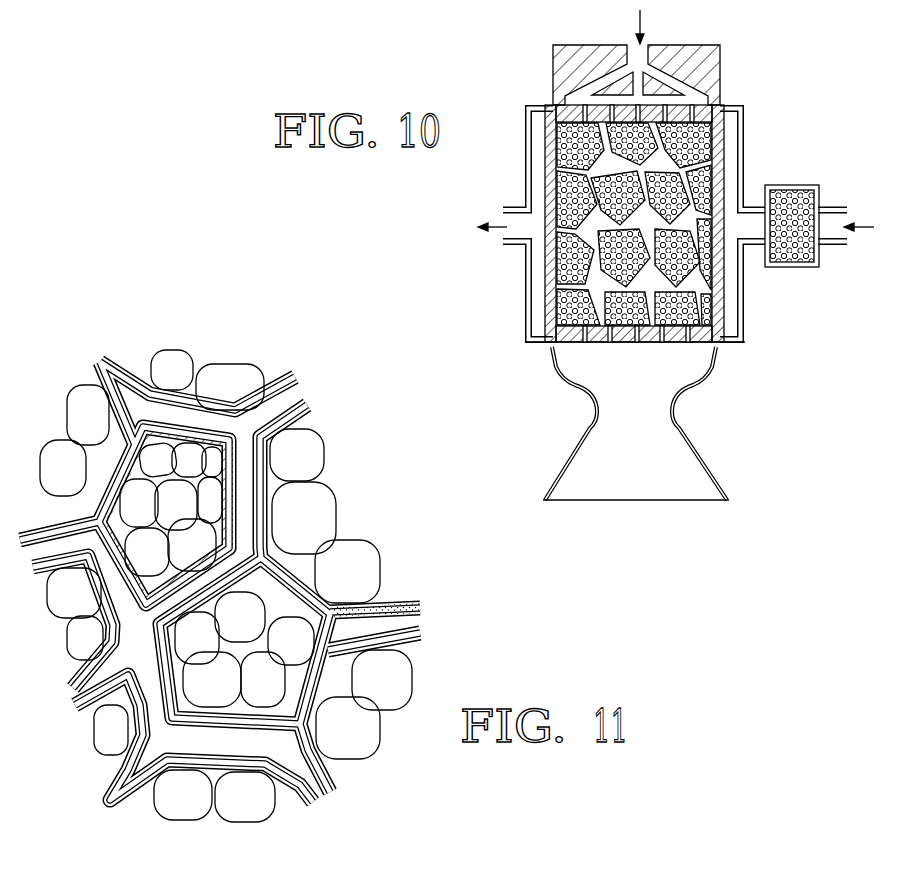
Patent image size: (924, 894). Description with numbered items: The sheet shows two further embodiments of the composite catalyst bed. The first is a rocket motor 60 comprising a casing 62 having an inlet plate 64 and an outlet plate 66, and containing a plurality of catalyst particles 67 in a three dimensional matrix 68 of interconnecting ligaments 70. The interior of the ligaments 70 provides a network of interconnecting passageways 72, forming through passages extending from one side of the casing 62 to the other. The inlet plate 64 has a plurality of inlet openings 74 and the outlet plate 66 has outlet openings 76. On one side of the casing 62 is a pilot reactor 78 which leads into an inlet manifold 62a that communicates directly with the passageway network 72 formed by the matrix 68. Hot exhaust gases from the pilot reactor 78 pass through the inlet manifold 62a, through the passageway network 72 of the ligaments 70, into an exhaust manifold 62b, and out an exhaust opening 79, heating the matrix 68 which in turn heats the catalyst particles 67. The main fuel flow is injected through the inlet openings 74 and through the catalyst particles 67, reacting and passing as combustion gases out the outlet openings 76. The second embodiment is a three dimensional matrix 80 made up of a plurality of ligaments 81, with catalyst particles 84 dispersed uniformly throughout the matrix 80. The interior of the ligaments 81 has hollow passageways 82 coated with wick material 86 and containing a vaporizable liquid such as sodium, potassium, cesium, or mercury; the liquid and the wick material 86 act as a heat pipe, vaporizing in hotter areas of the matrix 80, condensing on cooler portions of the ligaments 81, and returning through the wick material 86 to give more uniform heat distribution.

In FIG. 10, the rocket motor 60 is at (500, 257).
In FIG. 10, the casing 62 is at (746, 328).
In FIG. 10, the inlet manifold 62a is at (763, 223).
In FIG. 10, the exhaust manifold 62b is at (540, 152).
In FIG. 10, the inlet plate 64 is at (663, 98).
In FIG. 10, the outlet plate 66 is at (712, 345).
In FIG. 10, the catalyst particles 67 is at (560, 272).
In FIG. 10, the three dimensional matrix 68 is at (705, 165).
In FIG. 10, the ligaments 70 is at (705, 273).
In FIG. 10, the passageway network 72 is at (560, 290).
In FIG. 10, the inlet openings 74 is at (611, 103).
In FIG. 10, the outlet openings 76 is at (663, 345).
In FIG. 10, the pilot reactor 78 is at (823, 288).
In FIG. 10, the exhaust opening 79 is at (517, 220).
In FIG. 11, the three dimensional matrix 80 is at (224, 402).
In FIG. 11, the ligaments 81 is at (297, 563).
In FIG. 11, the hollow passageways 82 is at (251, 520).
In FIG. 11, the catalyst particles 84 is at (124, 508).
In FIG. 11, the wick material 86 is at (236, 473).